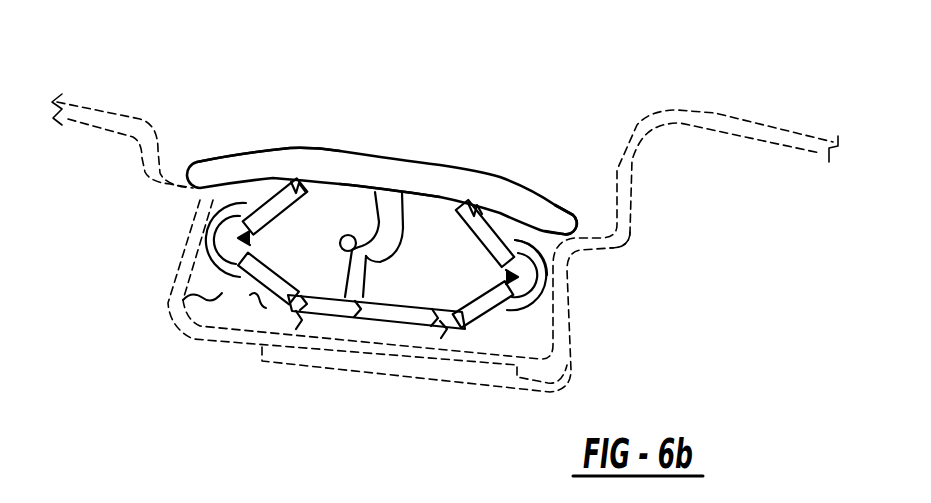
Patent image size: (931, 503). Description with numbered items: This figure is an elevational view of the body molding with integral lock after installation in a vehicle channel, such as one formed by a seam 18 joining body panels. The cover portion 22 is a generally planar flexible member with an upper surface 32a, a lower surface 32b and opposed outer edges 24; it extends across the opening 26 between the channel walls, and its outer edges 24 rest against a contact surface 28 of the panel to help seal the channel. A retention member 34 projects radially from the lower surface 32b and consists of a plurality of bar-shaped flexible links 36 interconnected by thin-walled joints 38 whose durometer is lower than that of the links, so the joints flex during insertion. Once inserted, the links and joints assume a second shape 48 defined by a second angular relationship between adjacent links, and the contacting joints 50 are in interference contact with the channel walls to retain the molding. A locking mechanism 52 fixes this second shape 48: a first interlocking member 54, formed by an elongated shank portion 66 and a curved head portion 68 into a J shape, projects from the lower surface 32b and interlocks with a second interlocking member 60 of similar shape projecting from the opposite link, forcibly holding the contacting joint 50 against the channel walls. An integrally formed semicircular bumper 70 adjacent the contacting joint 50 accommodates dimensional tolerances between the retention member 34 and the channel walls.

The seam 18 is at (377, 373).
The cover portion 22 is at (461, 156).
The outer edges 24 is at (563, 222).
The opening 26 is at (224, 295).
The contact surface 28 is at (565, 232).
The upper surface 32a is at (298, 148).
The lower surface 32b is at (428, 197).
The retention member 34 is at (480, 337).
The flexible links 36 is at (480, 312).
The joint 38 is at (297, 312).
The second shape 48 is at (253, 197).
The contacting joint 50 is at (547, 272).
The locking mechanism 52 is at (403, 252).
The first interlocking member 54 is at (373, 207).
The second interlocking member 60 is at (363, 277).
The elongated shank portion 66 is at (345, 278).
The curved head portion 68 is at (340, 241).
The bumper 70 is at (547, 292).